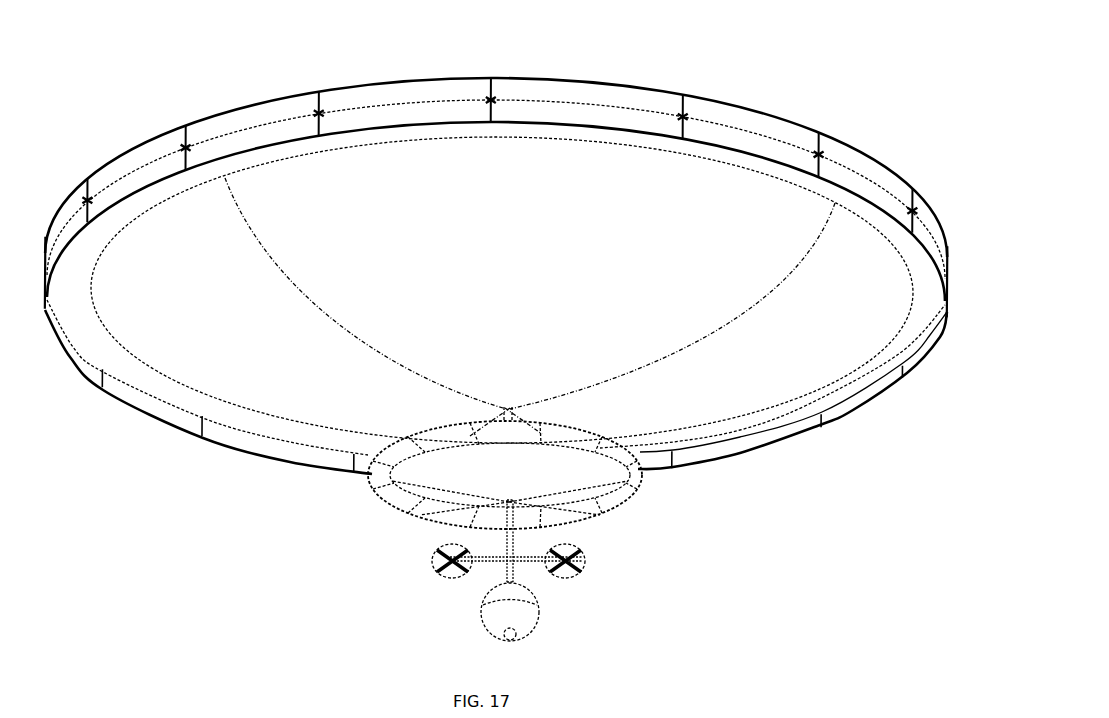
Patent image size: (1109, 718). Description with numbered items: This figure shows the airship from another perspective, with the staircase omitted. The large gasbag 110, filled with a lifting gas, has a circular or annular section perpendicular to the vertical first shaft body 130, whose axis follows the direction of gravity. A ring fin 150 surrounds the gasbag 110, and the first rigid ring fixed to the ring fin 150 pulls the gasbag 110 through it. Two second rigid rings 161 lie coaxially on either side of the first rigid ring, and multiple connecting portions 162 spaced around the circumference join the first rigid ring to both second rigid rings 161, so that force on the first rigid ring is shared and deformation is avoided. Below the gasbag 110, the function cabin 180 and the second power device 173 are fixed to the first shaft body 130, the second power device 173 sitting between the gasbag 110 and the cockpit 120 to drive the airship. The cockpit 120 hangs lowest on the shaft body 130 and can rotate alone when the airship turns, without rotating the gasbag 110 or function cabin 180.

The gasbag 110 is at (696, 220).
The cockpit 120 is at (525, 612).
The first shaft body 130 is at (510, 547).
The ring fin 150 is at (855, 207).
The second rigid ring 161 is at (703, 140).
The connecting portion 162 is at (685, 107).
The second power device 173 is at (590, 559).
The function cabin 180 is at (577, 492).